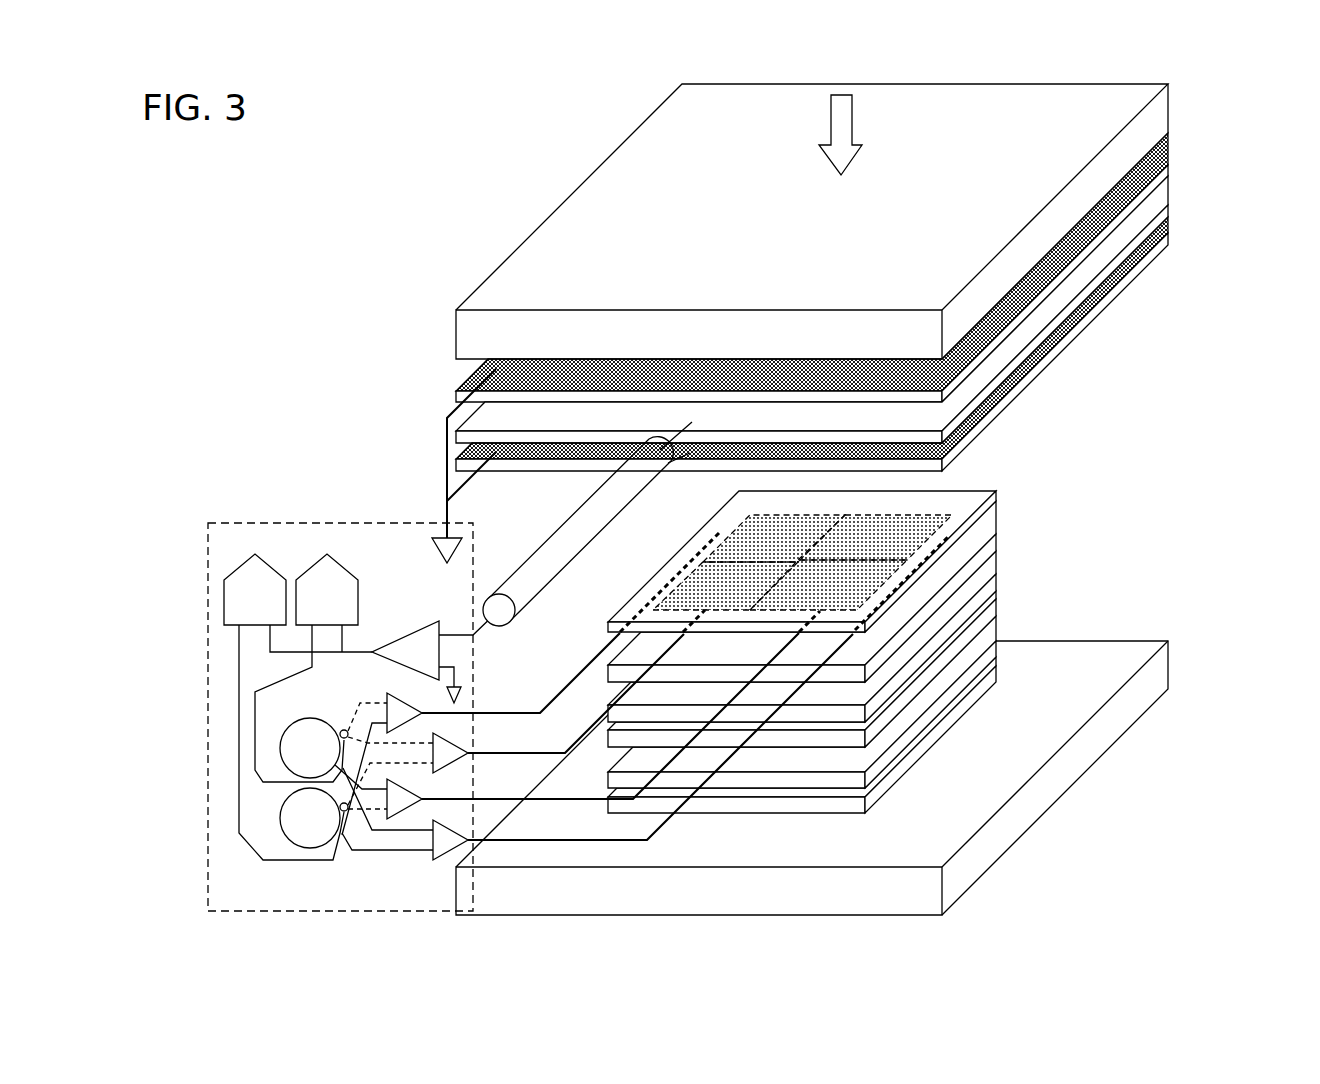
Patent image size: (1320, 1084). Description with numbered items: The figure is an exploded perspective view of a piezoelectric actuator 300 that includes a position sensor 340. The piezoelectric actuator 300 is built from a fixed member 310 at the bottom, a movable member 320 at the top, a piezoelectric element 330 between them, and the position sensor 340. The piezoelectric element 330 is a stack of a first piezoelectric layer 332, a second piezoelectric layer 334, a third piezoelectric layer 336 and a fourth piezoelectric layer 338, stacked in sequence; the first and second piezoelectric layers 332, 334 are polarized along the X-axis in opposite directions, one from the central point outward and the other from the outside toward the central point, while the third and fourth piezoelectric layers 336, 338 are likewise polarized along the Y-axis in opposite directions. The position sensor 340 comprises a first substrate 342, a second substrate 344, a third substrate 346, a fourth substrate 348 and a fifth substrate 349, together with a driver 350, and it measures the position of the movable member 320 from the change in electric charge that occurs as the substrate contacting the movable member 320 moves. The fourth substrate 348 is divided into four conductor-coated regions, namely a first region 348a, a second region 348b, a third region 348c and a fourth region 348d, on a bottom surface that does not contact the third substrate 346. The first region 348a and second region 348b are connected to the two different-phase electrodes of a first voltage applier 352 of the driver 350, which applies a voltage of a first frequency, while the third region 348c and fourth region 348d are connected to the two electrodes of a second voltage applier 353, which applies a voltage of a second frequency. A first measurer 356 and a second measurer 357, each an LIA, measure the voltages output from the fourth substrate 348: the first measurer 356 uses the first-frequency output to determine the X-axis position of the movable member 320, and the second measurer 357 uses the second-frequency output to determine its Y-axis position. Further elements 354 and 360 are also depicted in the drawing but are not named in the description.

The piezoelectric actuator 300 is at (490, 130).
The fixed member 310 is at (990, 838).
The movable member 320 is at (470, 333).
The piezoelectric element 330 is at (1060, 577).
The first piezoelectric layer 332 is at (1000, 584).
The second piezoelectric layer 334 is at (1000, 610).
The third piezoelectric layer 336 is at (1000, 651).
The fourth piezoelectric layer 338 is at (1000, 677).
The position sensor 340 is at (1023, 555).
The first substrate 342 is at (1030, 303).
The second substrate 344 is at (1033, 342).
The third substrate 346 is at (1023, 382).
The fourth substrate 348 is at (1000, 497).
The first region 348a is at (747, 537).
The second region 348b is at (697, 588).
The third region 348c is at (912, 530).
The fourth region 348d is at (800, 594).
The fifth substrate 349 is at (1000, 543).
The driver 350 is at (370, 522).
The first voltage applier 352 is at (280, 742).
The second voltage applier 353 is at (280, 815).
The voltage to current converter 354 is at (421, 626).
The first measurer 356 is at (346, 567).
The second measurer 357 is at (272, 564).
The wire sleeve 360 is at (556, 545).